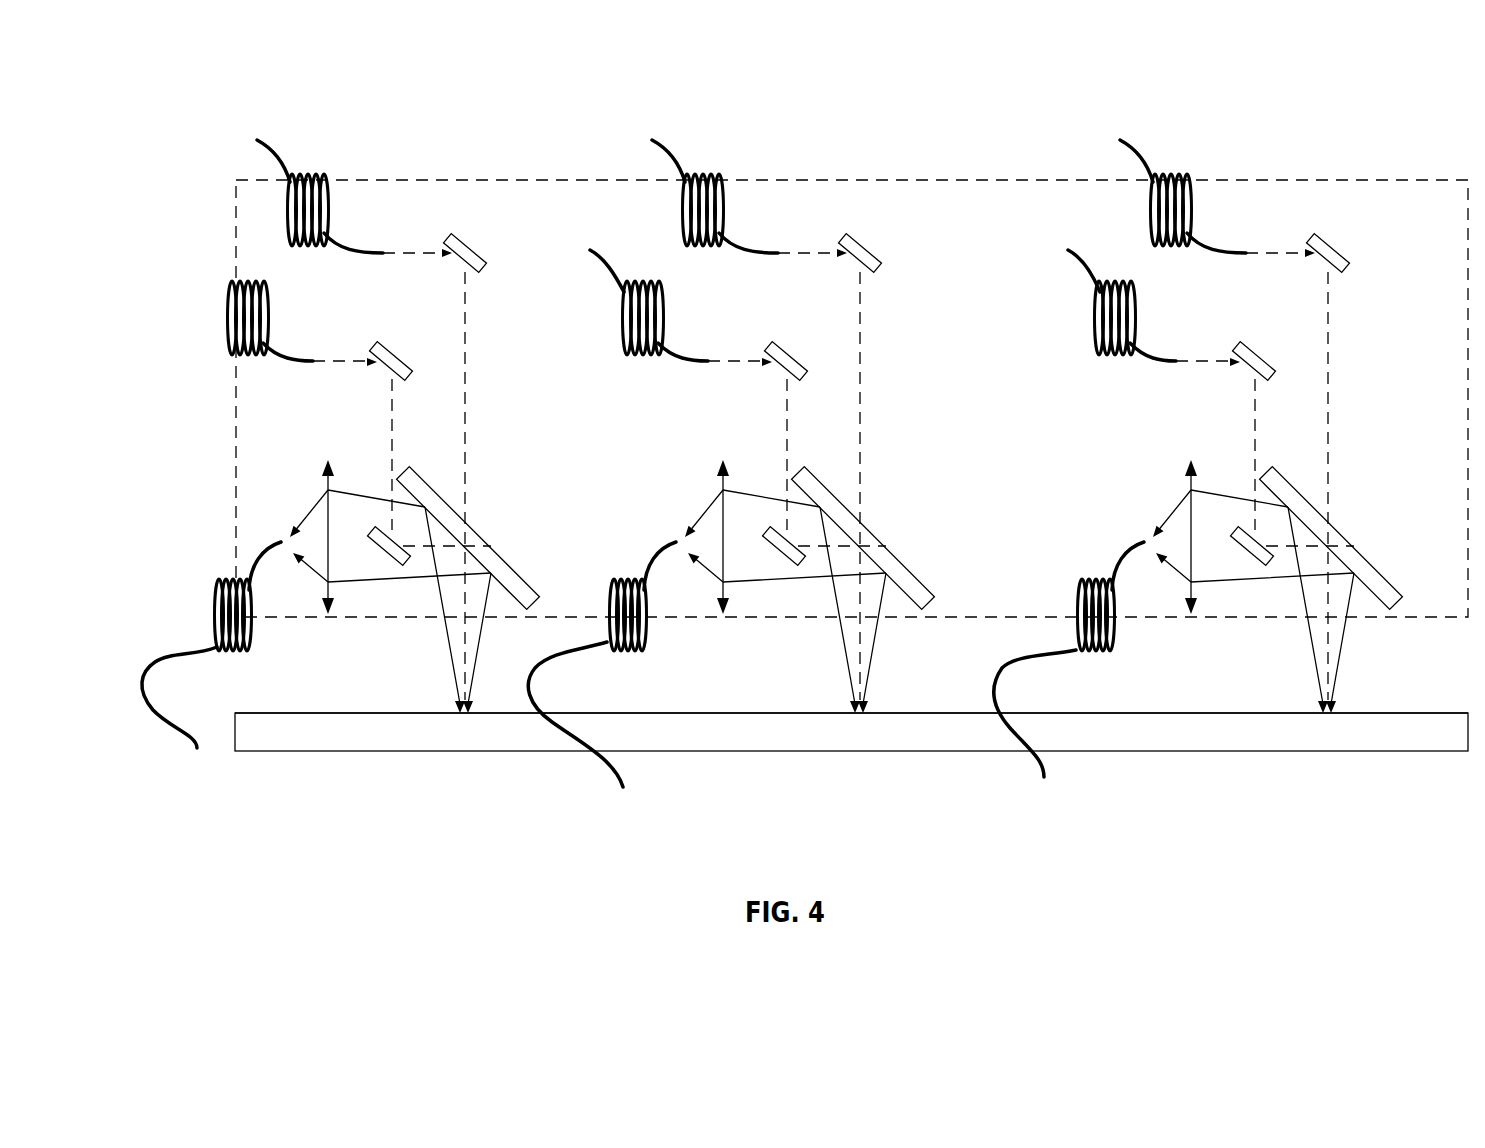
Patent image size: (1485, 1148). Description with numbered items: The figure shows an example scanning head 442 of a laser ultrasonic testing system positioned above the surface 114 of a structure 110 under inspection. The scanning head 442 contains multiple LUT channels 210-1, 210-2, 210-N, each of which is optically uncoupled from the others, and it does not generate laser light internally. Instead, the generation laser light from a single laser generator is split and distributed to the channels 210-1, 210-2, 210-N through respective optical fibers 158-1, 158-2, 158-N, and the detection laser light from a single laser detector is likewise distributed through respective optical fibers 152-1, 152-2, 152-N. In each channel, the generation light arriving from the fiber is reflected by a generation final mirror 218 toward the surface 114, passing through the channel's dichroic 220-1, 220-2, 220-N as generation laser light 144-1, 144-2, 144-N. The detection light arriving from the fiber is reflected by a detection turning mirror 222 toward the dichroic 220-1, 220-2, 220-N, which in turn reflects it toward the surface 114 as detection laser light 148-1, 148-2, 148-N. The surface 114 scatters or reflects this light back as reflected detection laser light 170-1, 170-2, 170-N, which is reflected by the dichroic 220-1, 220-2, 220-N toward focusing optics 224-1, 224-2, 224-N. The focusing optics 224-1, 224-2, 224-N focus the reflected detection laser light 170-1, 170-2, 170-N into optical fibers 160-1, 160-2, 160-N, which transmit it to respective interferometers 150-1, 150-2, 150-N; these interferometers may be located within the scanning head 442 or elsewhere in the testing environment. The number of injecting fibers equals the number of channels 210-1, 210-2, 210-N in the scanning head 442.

The scanning head 442 is at (1252, 180).
The structure 110 is at (370, 737).
The surface 114 is at (1399, 711).
The optical fiber 158-1 is at (288, 210).
The optical fiber 158-2 is at (656, 165).
The optical fiber 158-N is at (1120, 165).
The generation laser light 144-1 is at (402, 253).
The generation laser light 144-2 is at (787, 195).
The generation laser light 144-N is at (1284, 286).
The generation final mirror 218 is at (455, 265).
The optical fiber 152-1 is at (228, 320).
The optical fiber 152-2 is at (591, 313).
The optical fiber 152-N is at (1075, 305).
The detection laser light 148-1 is at (353, 363).
The detection laser light 148-2 is at (714, 377).
The detection laser light 148-N is at (1186, 377).
The detection turning mirror 222 is at (1260, 565).
The focusing optics 224-1 is at (326, 487).
The focusing optics 224-2 is at (759, 514).
The focusing optics 224-N is at (1225, 514).
The reflected detection laser light 170-1 is at (312, 510).
The reflected detection laser light 170-2 is at (649, 517).
The reflected detection laser light 170-N is at (1115, 516).
The optical fiber 160-1 is at (215, 600).
The optical fiber 160-2 is at (609, 569).
The optical fiber 160-N is at (1060, 584).
The interferometer 150-1 is at (198, 730).
The interferometer 150-2 is at (624, 745).
The interferometer 150-N is at (1038, 746).
The dichroic 220-1 is at (476, 527).
The dichroic 220-2 is at (882, 502).
The dichroic 220-N is at (1349, 502).
The LUT channel 210-1 is at (484, 459).
The LUT channel 210-2 is at (889, 459).
The LUT channel 210-N is at (1310, 459).